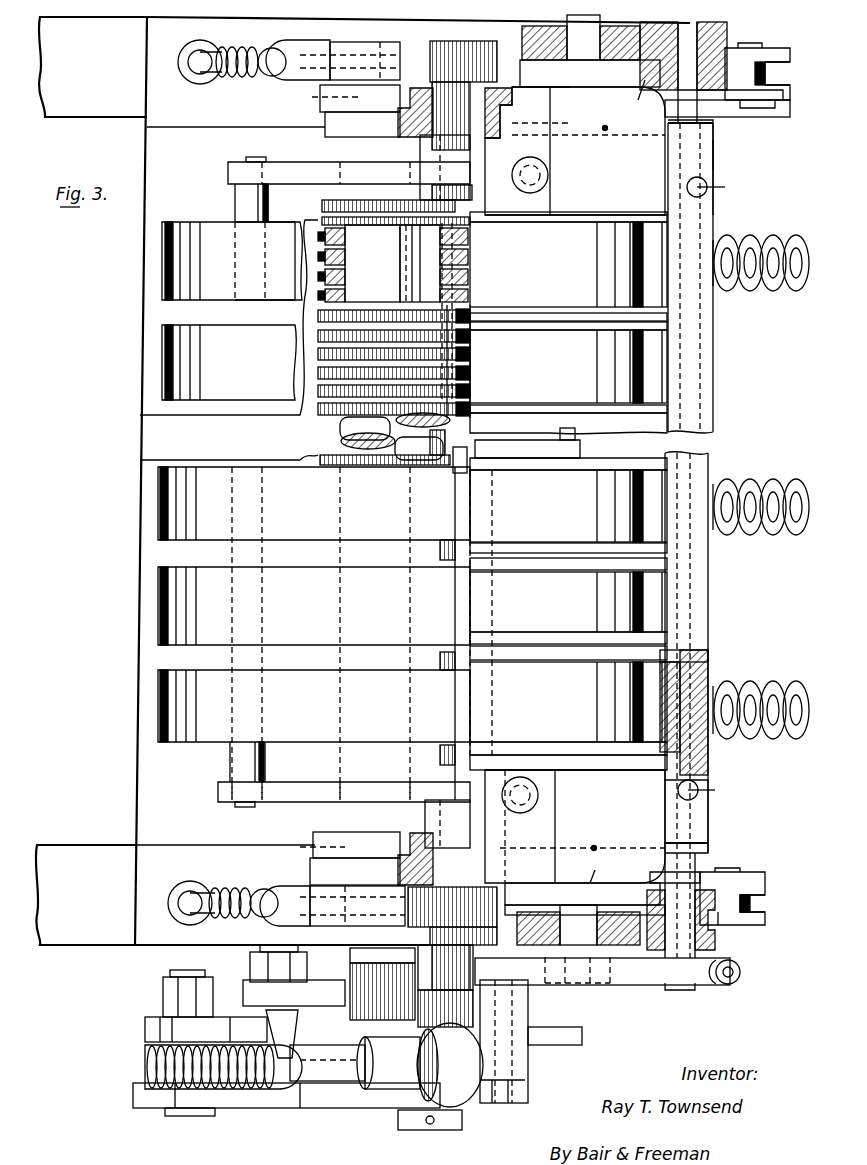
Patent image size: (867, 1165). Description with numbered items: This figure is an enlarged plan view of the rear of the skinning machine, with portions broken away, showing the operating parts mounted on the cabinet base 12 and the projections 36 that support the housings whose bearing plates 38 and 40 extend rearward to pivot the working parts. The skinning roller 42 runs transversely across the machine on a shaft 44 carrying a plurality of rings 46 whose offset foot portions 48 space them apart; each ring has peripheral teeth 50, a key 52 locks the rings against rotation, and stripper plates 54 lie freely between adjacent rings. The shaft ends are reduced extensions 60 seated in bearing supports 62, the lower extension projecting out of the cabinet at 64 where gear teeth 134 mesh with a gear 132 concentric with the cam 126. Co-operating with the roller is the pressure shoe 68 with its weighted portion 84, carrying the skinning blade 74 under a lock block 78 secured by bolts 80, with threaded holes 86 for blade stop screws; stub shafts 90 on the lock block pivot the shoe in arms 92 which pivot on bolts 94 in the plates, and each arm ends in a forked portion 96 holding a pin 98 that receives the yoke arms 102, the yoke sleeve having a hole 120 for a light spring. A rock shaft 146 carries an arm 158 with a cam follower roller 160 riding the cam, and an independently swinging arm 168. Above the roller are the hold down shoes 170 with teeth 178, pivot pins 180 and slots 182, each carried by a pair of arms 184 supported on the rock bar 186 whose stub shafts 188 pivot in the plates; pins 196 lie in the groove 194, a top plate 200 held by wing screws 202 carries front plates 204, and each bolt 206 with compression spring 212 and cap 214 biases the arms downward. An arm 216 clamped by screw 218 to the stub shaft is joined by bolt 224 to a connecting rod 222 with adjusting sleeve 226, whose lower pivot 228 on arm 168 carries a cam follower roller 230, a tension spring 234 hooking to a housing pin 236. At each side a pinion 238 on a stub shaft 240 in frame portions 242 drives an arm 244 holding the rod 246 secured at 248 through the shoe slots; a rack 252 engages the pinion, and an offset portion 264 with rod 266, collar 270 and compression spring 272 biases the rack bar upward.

The base 12 is at (82, 105).
The projections 36 is at (147, 45).
The bearing plate 38 is at (715, 937).
The bearing plate 40 is at (735, 49).
The skinning roller 42 is at (310, 262).
The shaft 44 is at (465, 260).
The rings 46 is at (322, 256).
The foot portion 48 is at (347, 250).
The teeth 50 is at (318, 279).
The key 52 is at (400, 257).
The stripper plates 54 is at (465, 276).
The reduced extensions 60 is at (337, 471).
The bearing supports 62 is at (326, 120).
The extended end of reduced portion 64 is at (360, 960).
The pressure shoe 68 is at (682, 150).
The skinning blade 74 is at (442, 548).
The lock block 78 is at (570, 205).
The bolts 80 is at (524, 165).
The weighted portion 84 is at (655, 178).
The threaded holes 86 is at (606, 132).
The stub shaft 90 is at (546, 90).
The arms 92 is at (775, 95).
The bolts 94 is at (600, 62).
The forked portion 96 is at (770, 106).
The pin 98 is at (752, 46).
The arms 102 is at (778, 80).
The hole 120 is at (555, 1030).
The cam 126 is at (158, 1030).
The gear 132 is at (438, 1000).
The gear teeth 134 is at (370, 975).
The rock shaft 146 is at (405, 1128).
The arm 158 is at (320, 995).
The cam follower roller 160 is at (240, 1018).
The arm 168 is at (245, 1102).
The hold down shoes 170 is at (149, 524).
The teeth 178 is at (610, 242).
The pivot point 180 is at (500, 750).
The slot 182 is at (190, 355).
The arms 184 is at (533, 560).
The rock bar 186 is at (728, 157).
The stub shaft 188 is at (705, 117).
The groove 194 is at (700, 772).
The pin 196 is at (690, 665).
The plate 200 is at (705, 222).
The wing screws 202 is at (707, 187).
The plates 204 is at (670, 690).
The bolt 206 is at (738, 340).
The compression spring 212 is at (770, 238).
The cap 214 is at (797, 338).
The arm 216 is at (630, 975).
The screw 218 is at (742, 970).
The connecting rod 222 is at (322, 1092).
The bolt 224 is at (502, 1080).
The adjusting screw sleeve 226 is at (420, 1088).
The pivot 228 is at (198, 1113).
The cam follower roller 230 is at (153, 1018).
The tension spring 234 is at (145, 1056).
The pin 236 is at (296, 1042).
The pinion 238 is at (490, 55).
The stub shaft 240 is at (428, 158).
The frame portions 242 is at (412, 108).
The arm 244 is at (228, 170).
The rod 246 is at (246, 194).
The securing point 248 is at (266, 160).
The rack 252 is at (380, 62).
The offset portion 264 is at (298, 55).
The rod 266 is at (266, 78).
The collar 270 is at (198, 84).
The compression spring 272 is at (243, 77).